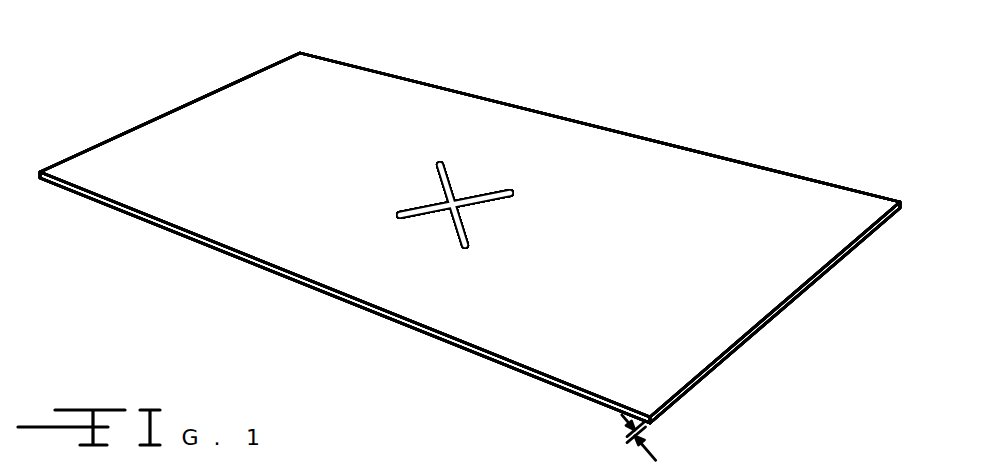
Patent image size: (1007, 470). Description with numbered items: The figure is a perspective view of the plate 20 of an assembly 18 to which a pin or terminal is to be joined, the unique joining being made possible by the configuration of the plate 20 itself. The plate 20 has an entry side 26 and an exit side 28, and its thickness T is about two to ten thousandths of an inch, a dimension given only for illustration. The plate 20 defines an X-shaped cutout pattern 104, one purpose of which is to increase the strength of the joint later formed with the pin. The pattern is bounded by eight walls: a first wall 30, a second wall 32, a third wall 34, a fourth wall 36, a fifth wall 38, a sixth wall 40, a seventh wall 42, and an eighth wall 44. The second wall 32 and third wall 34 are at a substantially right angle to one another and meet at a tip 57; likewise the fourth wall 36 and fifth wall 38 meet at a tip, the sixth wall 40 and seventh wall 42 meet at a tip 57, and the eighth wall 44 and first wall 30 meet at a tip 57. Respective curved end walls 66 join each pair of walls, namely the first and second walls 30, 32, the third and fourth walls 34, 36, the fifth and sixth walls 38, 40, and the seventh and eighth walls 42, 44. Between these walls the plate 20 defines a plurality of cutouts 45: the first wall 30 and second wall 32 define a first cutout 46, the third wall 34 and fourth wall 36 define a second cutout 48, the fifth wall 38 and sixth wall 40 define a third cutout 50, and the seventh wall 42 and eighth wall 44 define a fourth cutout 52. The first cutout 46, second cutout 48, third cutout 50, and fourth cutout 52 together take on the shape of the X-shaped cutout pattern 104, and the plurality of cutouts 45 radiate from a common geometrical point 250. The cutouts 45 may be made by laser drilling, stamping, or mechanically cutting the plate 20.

The assembly 18 is at (466, 87).
The plate 20 is at (282, 109).
The entry side 26 is at (110, 200).
The exit side 28 is at (762, 188).
The first wall 30 is at (427, 235).
The second wall 32 is at (422, 198).
The third wall 34 is at (434, 180).
The fourth wall 36 is at (462, 183).
The fifth wall 38 is at (512, 192).
The sixth wall 40 is at (478, 208).
The seventh wall 42 is at (473, 223).
The eighth wall 44 is at (450, 236).
The plurality of cutouts 45 is at (473, 198).
The first cutout 46 is at (404, 212).
The second cutout 48 is at (452, 165).
The third cutout 50 is at (503, 200).
The fourth cutout 52 is at (462, 250).
The tip 57 is at (434, 197).
The curved end wall 66 is at (444, 160).
The X-shaped cutout pattern 104 is at (564, 141).
The common geometrical point 250 is at (428, 200).
The thickness T is at (656, 460).